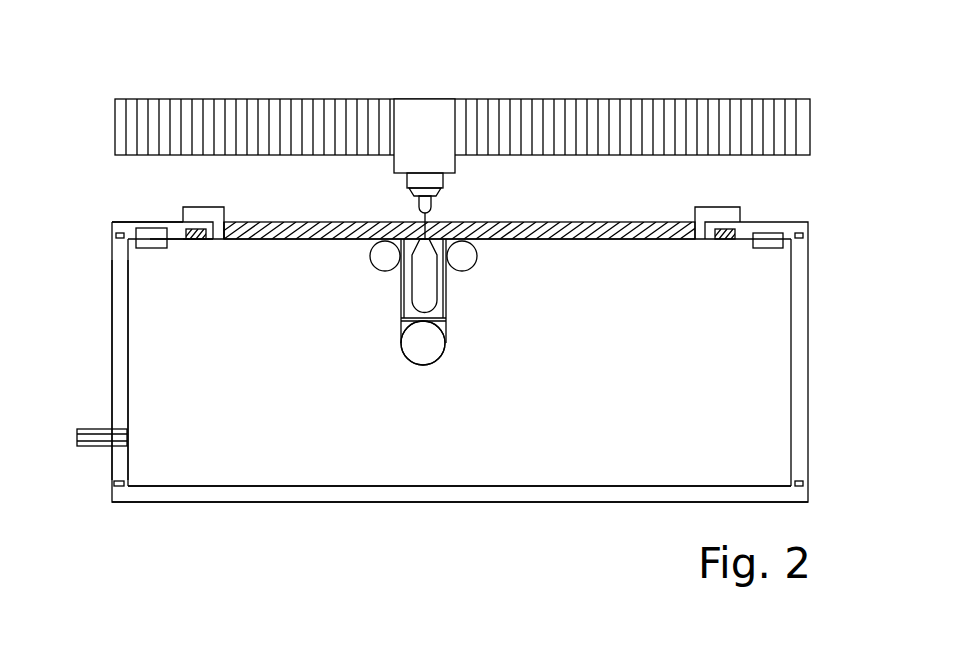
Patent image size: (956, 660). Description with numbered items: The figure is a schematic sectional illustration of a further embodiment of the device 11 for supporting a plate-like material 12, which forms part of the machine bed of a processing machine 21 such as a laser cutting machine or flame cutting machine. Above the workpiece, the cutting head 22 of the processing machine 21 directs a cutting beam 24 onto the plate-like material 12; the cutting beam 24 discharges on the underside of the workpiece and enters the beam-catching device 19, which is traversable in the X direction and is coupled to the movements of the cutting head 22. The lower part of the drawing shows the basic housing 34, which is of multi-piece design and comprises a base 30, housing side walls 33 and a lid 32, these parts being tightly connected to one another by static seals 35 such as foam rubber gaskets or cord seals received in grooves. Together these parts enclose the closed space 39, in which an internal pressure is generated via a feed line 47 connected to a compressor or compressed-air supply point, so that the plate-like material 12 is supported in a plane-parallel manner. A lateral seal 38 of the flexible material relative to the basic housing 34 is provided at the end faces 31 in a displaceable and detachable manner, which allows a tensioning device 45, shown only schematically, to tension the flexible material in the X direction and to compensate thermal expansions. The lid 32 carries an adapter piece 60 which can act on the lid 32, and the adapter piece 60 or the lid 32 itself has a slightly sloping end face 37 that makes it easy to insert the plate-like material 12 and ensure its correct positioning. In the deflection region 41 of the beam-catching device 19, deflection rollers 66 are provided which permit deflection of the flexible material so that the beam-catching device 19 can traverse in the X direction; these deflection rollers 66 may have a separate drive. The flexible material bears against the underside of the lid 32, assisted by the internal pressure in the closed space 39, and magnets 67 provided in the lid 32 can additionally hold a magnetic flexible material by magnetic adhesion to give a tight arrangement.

The device 11 is at (819, 246).
The plate-like material 12 is at (298, 232).
The beam-catching device 19 is at (459, 325).
The processing machine 21 is at (112, 88).
The cutting head 22 is at (422, 120).
The cutting beam 24 is at (430, 213).
The base 30 is at (203, 493).
The end faces 31 is at (127, 213).
The lid 32 is at (176, 226).
The housing side walls 33 is at (118, 337).
The basic housing 34 is at (98, 500).
The static seals 35 is at (101, 246).
The sloping end face 37 is at (232, 222).
The lateral seal 38 is at (190, 260).
The closed space 39 is at (292, 389).
The deflection region 41 is at (455, 356).
The tensioning device 45 is at (153, 262).
The feed line 47 is at (90, 428).
The adapter piece 60 is at (212, 215).
The deflection rollers 66 is at (380, 262).
The magnets 67 is at (197, 240).